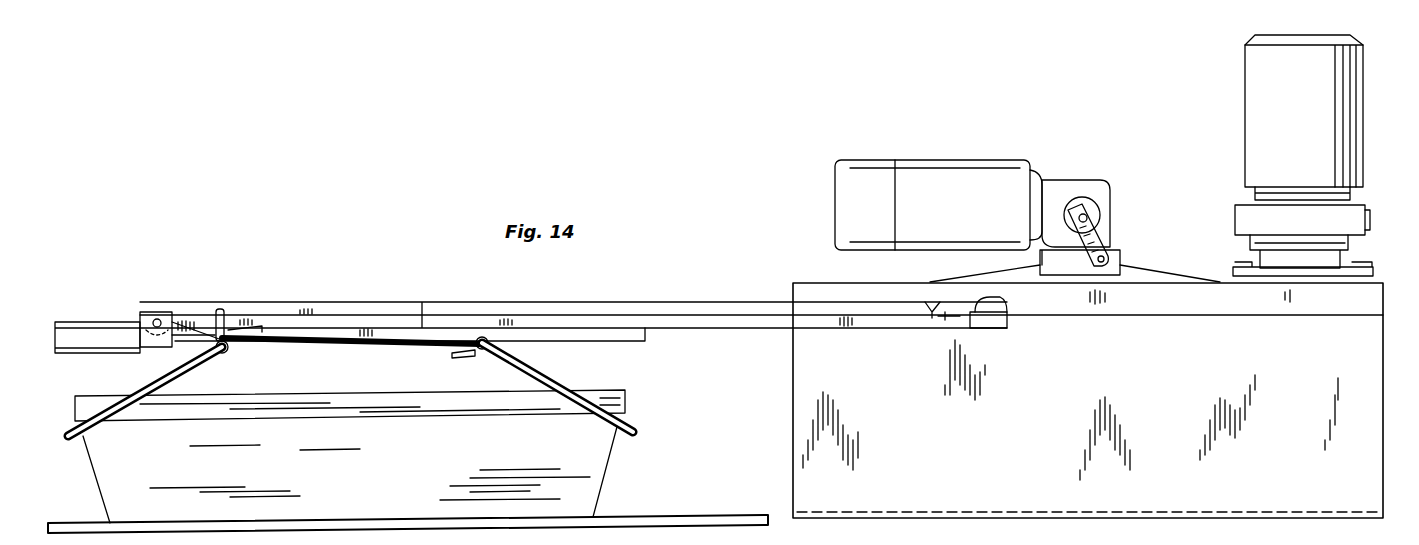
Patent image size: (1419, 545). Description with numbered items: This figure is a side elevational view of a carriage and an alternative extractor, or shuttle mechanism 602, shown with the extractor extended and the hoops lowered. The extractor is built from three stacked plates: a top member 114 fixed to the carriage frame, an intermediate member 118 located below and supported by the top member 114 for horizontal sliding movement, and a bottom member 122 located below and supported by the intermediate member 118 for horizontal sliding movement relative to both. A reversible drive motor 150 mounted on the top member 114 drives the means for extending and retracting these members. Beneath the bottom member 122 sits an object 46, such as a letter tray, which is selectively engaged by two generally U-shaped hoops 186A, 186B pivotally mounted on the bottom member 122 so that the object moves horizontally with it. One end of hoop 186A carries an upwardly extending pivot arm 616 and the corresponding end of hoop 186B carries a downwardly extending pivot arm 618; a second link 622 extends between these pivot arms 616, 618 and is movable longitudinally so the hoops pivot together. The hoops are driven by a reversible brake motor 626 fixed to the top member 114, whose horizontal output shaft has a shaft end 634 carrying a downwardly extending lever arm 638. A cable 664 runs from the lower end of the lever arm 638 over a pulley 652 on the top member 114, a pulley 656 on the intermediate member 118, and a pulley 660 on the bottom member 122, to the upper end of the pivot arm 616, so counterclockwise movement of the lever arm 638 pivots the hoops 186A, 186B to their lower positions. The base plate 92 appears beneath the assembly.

The base plate 92 is at (995, 522).
The object 46 is at (372, 469).
The bottom member 122 is at (112, 300).
The pulley 660 is at (157, 312).
The intermediate member 118 is at (636, 290).
The cable 664 is at (400, 291).
The second link 622 is at (420, 360).
The pivot arm 616 is at (228, 328).
The pivot arm 618 is at (483, 352).
The hoop 186A is at (82, 436).
The hoop 186B is at (633, 432).
The top member 114 is at (813, 283).
The pulley 652 is at (928, 312).
The pulley 656 is at (1007, 297).
The motor 626 is at (980, 202).
The shuttle mechanism 602 is at (979, 153).
The shaft end 634 is at (1084, 200).
The lever arm 638 is at (1100, 240).
The drive motor 150 is at (1318, 118).